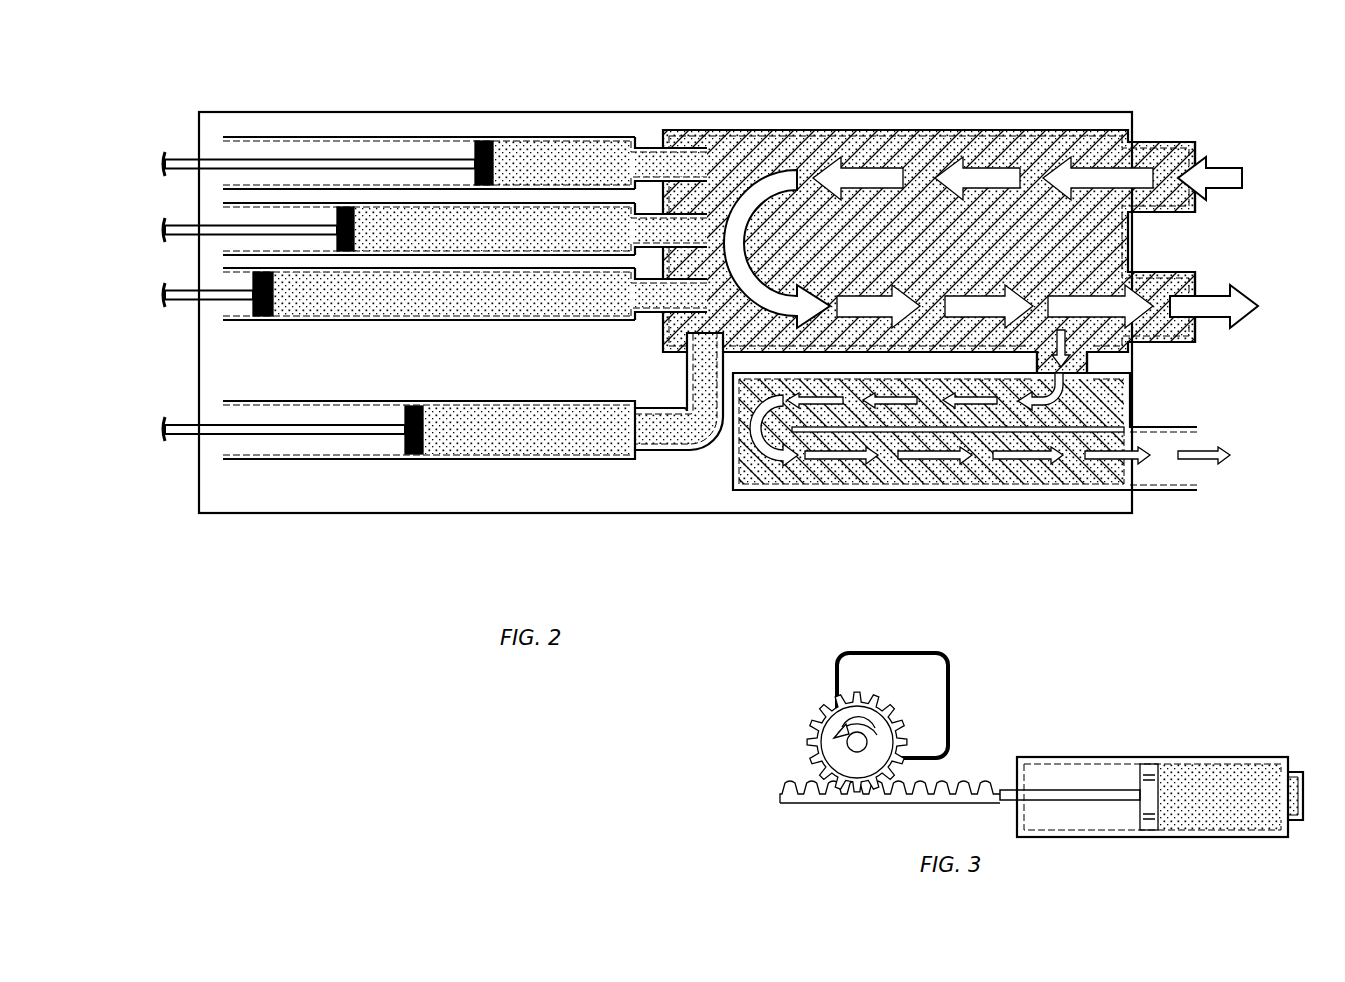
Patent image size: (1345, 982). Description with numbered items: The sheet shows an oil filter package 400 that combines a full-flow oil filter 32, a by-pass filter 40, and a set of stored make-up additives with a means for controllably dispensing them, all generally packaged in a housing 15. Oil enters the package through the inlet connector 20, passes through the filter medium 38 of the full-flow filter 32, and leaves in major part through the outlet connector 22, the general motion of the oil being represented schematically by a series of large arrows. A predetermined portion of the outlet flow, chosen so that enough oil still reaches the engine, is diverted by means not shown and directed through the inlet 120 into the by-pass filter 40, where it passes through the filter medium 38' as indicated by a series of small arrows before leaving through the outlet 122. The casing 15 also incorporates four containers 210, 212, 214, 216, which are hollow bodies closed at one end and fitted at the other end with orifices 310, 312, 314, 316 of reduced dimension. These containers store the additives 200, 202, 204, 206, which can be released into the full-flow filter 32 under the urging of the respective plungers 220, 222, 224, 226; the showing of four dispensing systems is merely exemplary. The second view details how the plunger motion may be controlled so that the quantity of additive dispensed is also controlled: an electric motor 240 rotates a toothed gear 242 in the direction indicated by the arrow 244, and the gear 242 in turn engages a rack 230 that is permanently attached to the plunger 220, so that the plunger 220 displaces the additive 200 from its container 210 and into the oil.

In FIG. 2, the filter package 400 is at (163, 82).
In FIG. 2, the housing 15 is at (555, 513).
In FIG. 2, the inlet connector 20 is at (1173, 162).
In FIG. 2, the outlet connector 22 is at (1173, 285).
In FIG. 2, the full-flow oil filter 32 is at (1010, 130).
In FIG. 2, the filter medium 38 is at (788, 201).
In FIG. 2, the filter medium 38' is at (787, 478).
In FIG. 2, the by-pass filter 40 is at (970, 490).
In FIG. 2, the inlet 120 is at (1090, 362).
In FIG. 2, the outlet 122 is at (1163, 472).
In FIG. 2, the additive 200 is at (568, 137).
In FIG. 3, the additive 200 is at (1210, 757).
In FIG. 2, the additive 202 is at (403, 227).
In FIG. 2, the additive 204 is at (295, 285).
In FIG. 2, the additive 206 is at (455, 440).
In FIG. 2, the container 210 is at (530, 170).
In FIG. 3, the container 210 is at (1172, 755).
In FIG. 2, the container 212 is at (358, 204).
In FIG. 2, the container 214 is at (303, 267).
In FIG. 2, the container 216 is at (347, 460).
In FIG. 2, the plunger 220 is at (447, 163).
In FIG. 3, the plunger 220 is at (1090, 790).
In FIG. 2, the plunger 222 is at (318, 228).
In FIG. 2, the plunger 224 is at (222, 293).
In FIG. 2, the plunger 226 is at (283, 427).
In FIG. 2, the orifice 310 is at (718, 160).
In FIG. 2, the orifice 312 is at (730, 217).
In FIG. 2, the orifice 314 is at (717, 307).
In FIG. 2, the orifice 316 is at (703, 330).
In FIG. 3, the rack 230 is at (800, 785).
In FIG. 3, the electric motor 240 is at (933, 683).
In FIG. 3, the toothed gear 242 is at (810, 735).
In FIG. 3, the arrow 244 is at (837, 723).